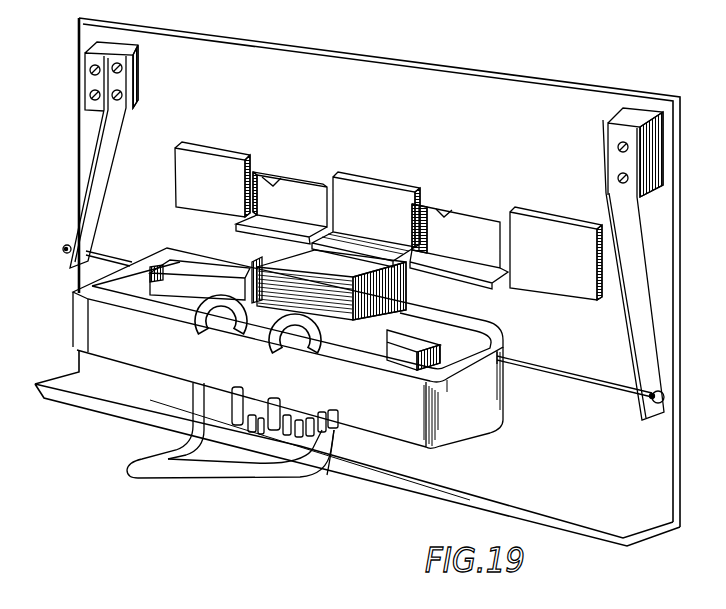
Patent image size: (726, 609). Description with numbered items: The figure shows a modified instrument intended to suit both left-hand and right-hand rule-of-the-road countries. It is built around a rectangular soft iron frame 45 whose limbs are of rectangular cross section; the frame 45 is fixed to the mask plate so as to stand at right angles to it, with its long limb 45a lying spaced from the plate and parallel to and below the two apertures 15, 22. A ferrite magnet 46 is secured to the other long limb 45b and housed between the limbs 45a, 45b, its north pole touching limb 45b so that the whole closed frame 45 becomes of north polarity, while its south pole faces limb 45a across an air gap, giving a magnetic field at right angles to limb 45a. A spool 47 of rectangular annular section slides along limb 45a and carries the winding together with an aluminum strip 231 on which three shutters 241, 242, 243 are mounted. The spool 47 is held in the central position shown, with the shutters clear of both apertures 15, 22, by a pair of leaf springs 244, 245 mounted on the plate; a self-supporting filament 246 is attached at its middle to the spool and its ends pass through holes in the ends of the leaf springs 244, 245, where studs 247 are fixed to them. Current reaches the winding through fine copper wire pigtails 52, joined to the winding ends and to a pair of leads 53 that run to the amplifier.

The aperture 15 is at (445, 215).
The aperture 22 is at (275, 184).
The rectangular soft iron frame 45 is at (462, 405).
The long limb of the frame 45a is at (473, 323).
The other long limb of the frame 45b is at (223, 308).
The ferrite magnet 46 is at (407, 353).
The spool 47 is at (377, 308).
The fine copper wire pigtails 52 is at (273, 435).
The leads 53 is at (167, 468).
The aluminum strip 231 is at (454, 267).
The shutter 241 is at (215, 165).
The shutter 242 is at (355, 197).
The shutter 243 is at (547, 232).
The leaf spring 244 is at (117, 127).
The leaf spring 245 is at (633, 334).
The self-supporting filament 246 is at (108, 260).
The studs 247 is at (66, 245).